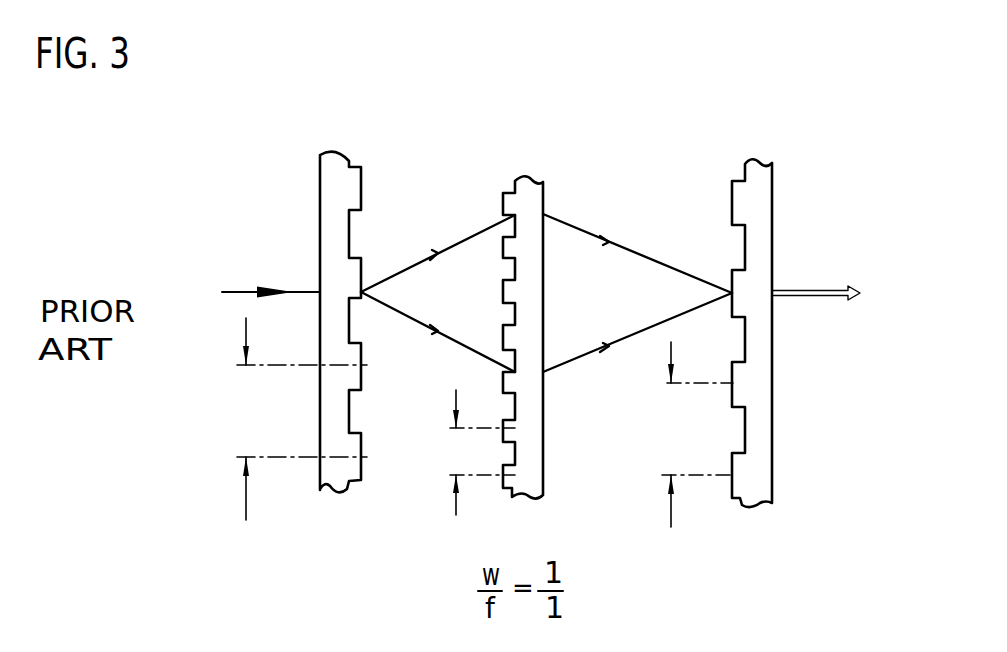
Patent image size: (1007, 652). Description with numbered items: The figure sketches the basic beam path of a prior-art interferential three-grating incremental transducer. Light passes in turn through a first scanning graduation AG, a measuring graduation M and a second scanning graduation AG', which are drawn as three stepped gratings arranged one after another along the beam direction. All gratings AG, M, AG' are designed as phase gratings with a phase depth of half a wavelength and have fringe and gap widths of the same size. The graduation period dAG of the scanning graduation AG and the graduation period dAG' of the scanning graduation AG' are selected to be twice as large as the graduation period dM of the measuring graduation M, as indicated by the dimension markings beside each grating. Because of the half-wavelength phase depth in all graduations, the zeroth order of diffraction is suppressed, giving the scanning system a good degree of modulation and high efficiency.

The scanning graduation AG is at (320, 348).
The measuring graduation M is at (523, 468).
The scanning graduation AG' is at (791, 353).
The graduation period dAG is at (295, 419).
The graduation period dM is at (475, 452).
The graduation period dAG' is at (689, 434).